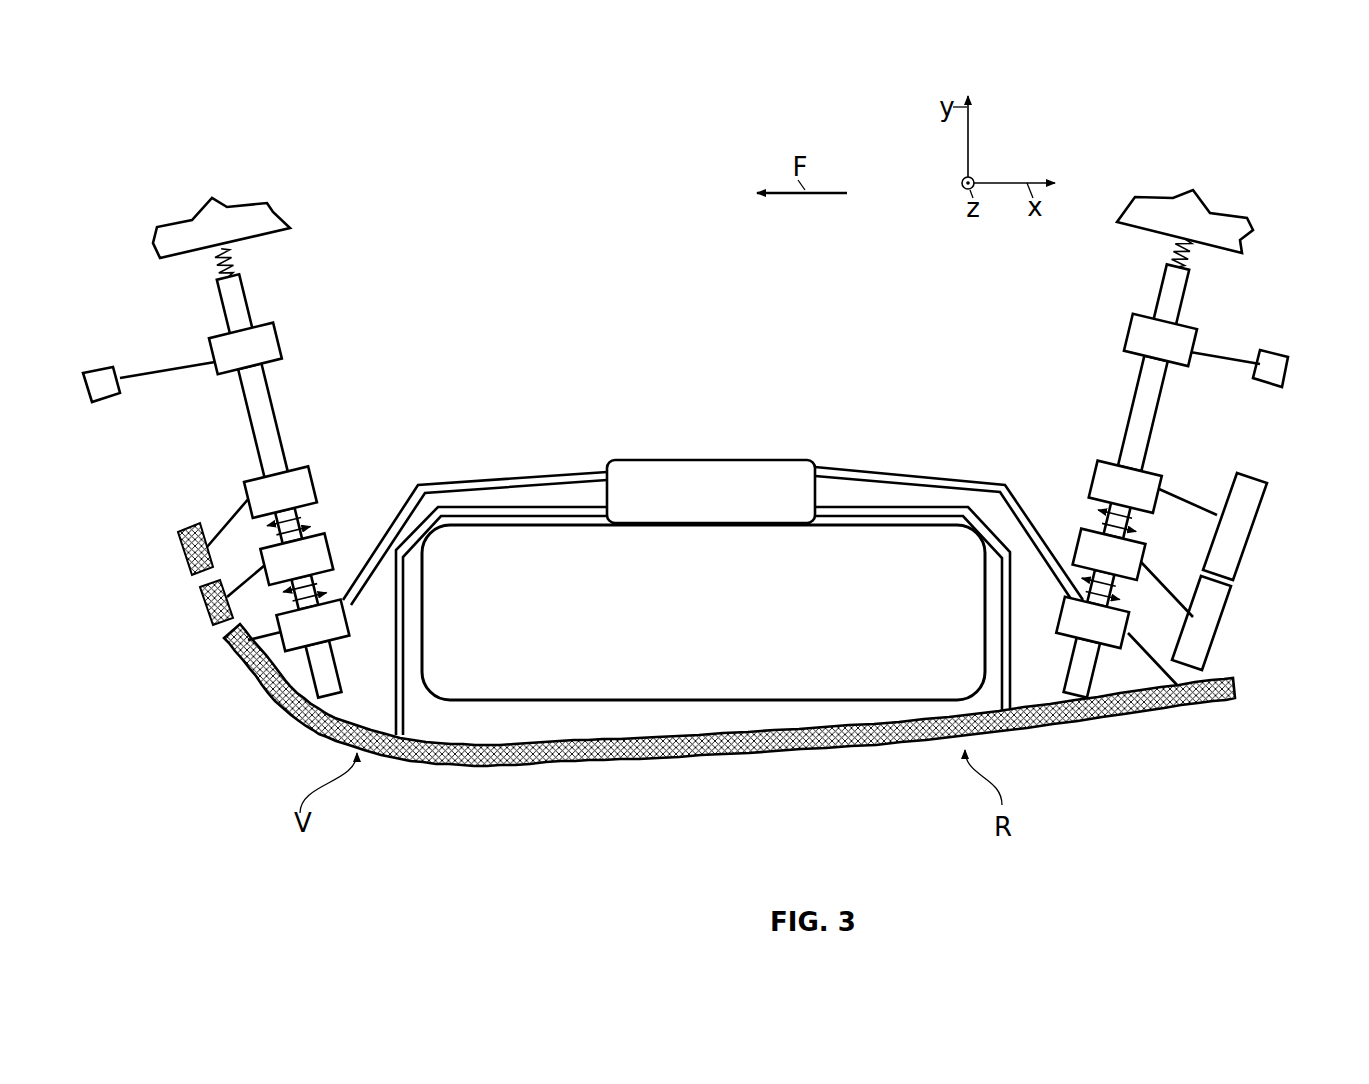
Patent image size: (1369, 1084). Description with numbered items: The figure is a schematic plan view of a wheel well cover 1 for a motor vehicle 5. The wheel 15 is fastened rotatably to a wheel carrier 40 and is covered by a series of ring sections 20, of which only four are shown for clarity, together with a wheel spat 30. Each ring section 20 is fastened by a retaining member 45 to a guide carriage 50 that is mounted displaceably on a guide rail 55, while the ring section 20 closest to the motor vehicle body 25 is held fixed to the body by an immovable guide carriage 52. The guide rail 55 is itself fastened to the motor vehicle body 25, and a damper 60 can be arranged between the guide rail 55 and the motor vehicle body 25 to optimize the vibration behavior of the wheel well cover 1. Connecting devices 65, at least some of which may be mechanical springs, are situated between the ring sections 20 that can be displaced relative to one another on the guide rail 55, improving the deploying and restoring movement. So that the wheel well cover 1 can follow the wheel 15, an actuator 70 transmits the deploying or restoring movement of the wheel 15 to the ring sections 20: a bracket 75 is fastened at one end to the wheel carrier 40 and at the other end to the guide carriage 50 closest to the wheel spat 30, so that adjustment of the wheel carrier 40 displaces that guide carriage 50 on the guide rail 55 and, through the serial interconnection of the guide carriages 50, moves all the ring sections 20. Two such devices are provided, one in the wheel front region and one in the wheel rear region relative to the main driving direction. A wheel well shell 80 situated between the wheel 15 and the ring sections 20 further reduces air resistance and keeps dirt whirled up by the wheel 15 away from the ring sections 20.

The wheel well cover 1 is at (498, 762).
The motor vehicle 5 is at (603, 222).
The wheel 15 is at (692, 621).
The ring section 20 is at (105, 380).
The motor vehicle body 25 is at (212, 222).
The wheel spat 30 is at (622, 755).
The wheel carrier 40 is at (692, 501).
The retaining member 45 is at (167, 368).
The guide carriage 50 is at (258, 478).
The immovable guide carriage 52 is at (268, 347).
The guide rail 55 is at (230, 313).
The damper 60 is at (217, 262).
The connecting device 65 is at (307, 523).
The actuator 70 is at (477, 487).
The bracket 75 is at (547, 478).
The wheel well shell 80 is at (398, 698).